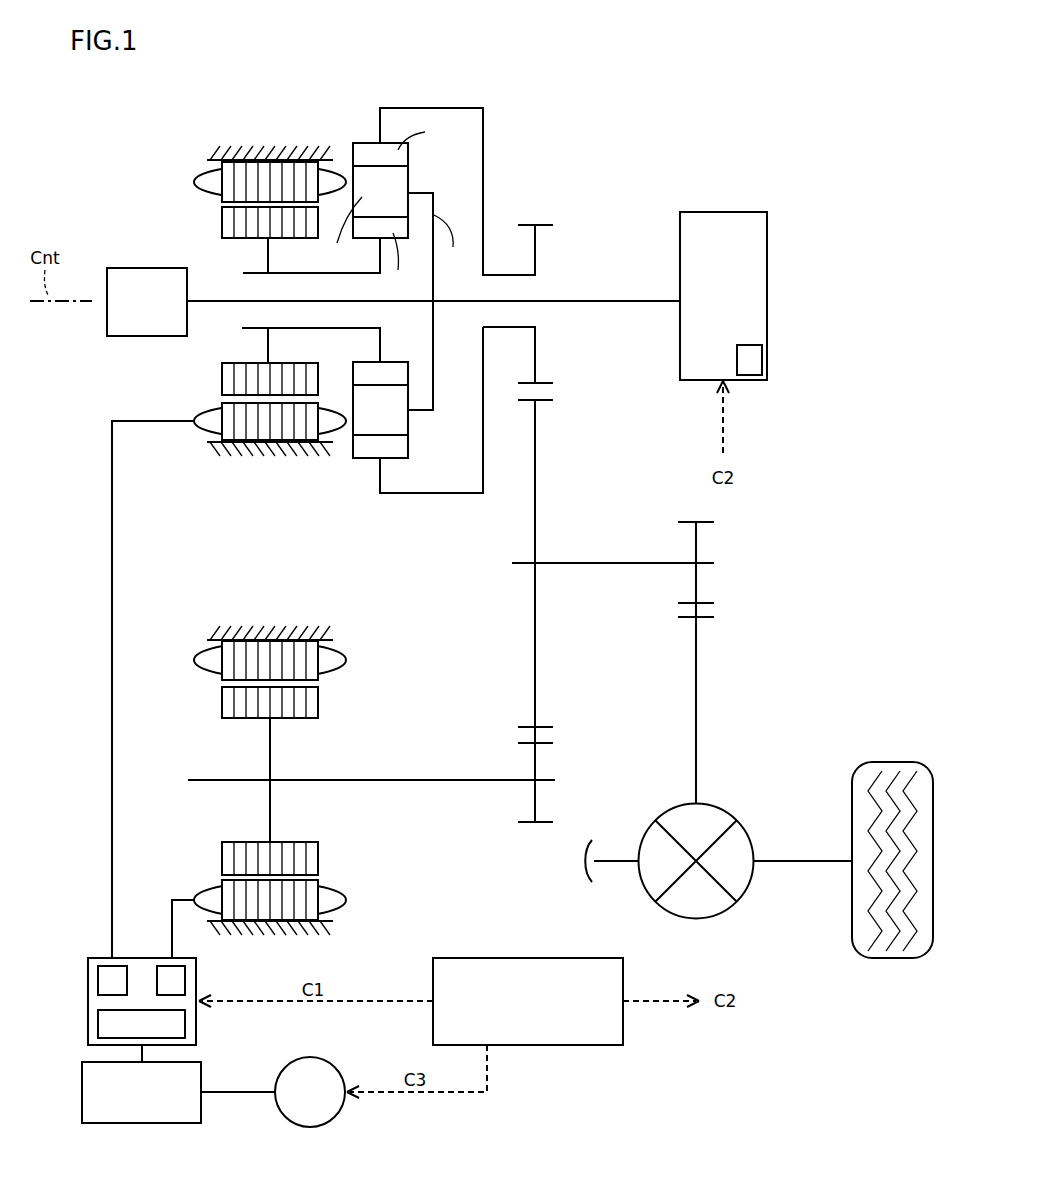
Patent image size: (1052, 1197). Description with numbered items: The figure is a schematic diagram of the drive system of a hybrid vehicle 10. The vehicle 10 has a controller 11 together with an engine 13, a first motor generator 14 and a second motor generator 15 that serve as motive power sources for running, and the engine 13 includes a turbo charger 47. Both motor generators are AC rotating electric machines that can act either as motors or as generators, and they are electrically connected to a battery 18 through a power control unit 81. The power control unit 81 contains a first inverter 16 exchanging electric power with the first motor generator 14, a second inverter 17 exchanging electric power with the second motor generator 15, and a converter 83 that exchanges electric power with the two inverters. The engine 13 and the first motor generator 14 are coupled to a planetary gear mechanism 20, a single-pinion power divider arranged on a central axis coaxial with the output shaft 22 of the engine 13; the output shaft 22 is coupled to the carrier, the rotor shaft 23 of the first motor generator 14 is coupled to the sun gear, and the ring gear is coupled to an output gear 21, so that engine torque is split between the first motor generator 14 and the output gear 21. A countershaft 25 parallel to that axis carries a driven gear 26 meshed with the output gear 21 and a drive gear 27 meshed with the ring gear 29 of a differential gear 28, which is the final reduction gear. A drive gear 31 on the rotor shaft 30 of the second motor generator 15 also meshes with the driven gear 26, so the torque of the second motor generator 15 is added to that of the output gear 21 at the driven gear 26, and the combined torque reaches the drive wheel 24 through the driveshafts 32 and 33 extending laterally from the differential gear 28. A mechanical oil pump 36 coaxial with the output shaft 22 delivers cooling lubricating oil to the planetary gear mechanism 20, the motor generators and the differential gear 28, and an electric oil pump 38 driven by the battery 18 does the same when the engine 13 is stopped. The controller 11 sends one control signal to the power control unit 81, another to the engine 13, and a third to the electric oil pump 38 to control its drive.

The hybrid vehicle 10 is at (680, 137).
The controller 11 is at (565, 957).
The engine 13 is at (769, 242).
The first motor generator 14 is at (197, 167).
The second motor generator 15 is at (197, 645).
The first inverter 16 is at (97, 968).
The second inverter 17 is at (187, 972).
The battery 18 is at (190, 1061).
The planetary gear mechanism 20 is at (345, 122).
The output gear 21 is at (545, 383).
The output shaft 22 is at (644, 299).
The rotor shaft 23 is at (243, 272).
The drive wheel 24 is at (893, 760).
The countershaft 25 is at (599, 564).
The driven gear 26 is at (545, 401).
The drive gear 27 is at (703, 523).
The differential gear 28 is at (715, 805).
The ring gear 29 is at (703, 618).
The rotor shaft 30 is at (195, 779).
The drive gear 31 is at (545, 744).
The driveshaft 32 is at (608, 863).
The driveshaft 33 is at (802, 864).
The mechanical oil pump 36 is at (147, 267).
The electric oil pump 38 is at (324, 1060).
The turbo charger 47 is at (766, 358).
The power control unit 81 is at (87, 997).
The converter 83 is at (97, 1028).